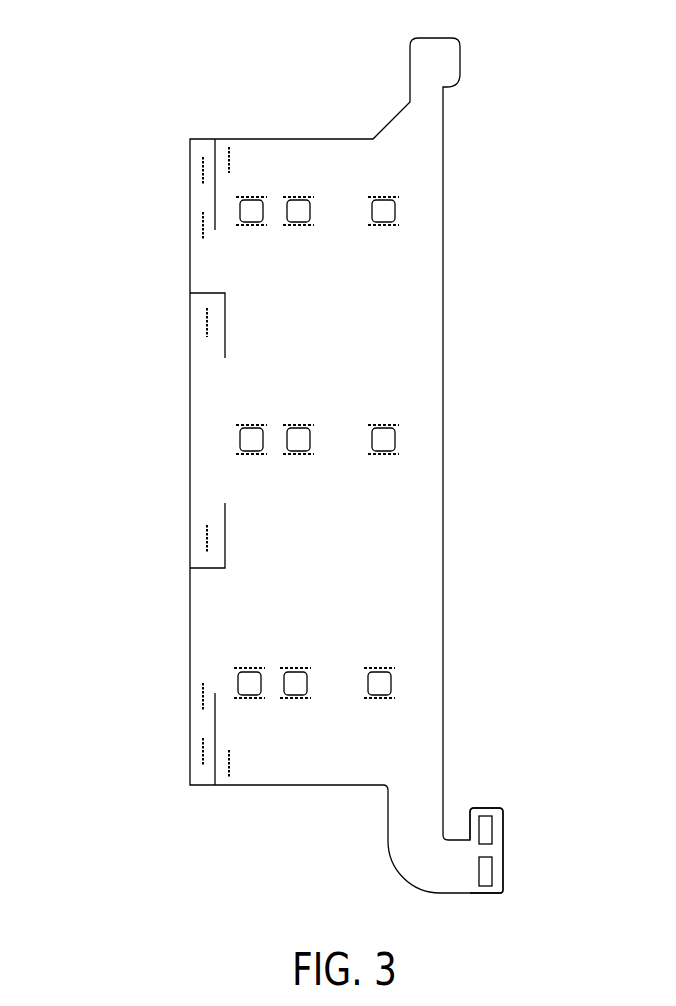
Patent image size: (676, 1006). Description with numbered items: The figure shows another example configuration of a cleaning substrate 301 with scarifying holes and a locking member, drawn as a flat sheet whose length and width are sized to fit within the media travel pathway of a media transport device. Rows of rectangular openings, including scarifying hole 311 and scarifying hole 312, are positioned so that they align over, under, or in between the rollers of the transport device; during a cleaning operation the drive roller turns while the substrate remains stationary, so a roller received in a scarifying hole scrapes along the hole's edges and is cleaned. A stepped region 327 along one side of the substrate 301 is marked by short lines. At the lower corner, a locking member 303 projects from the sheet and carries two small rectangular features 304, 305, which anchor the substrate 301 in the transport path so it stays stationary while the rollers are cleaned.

The circuit board assembly 301 is at (110, 89).
The board edge region 327 is at (208, 463).
The first connector 311 is at (396, 212).
The scarifying hole 312 is at (396, 440).
The connector tab 303 is at (483, 808).
The first terminal 304 is at (492, 838).
The second terminal 305 is at (492, 875).